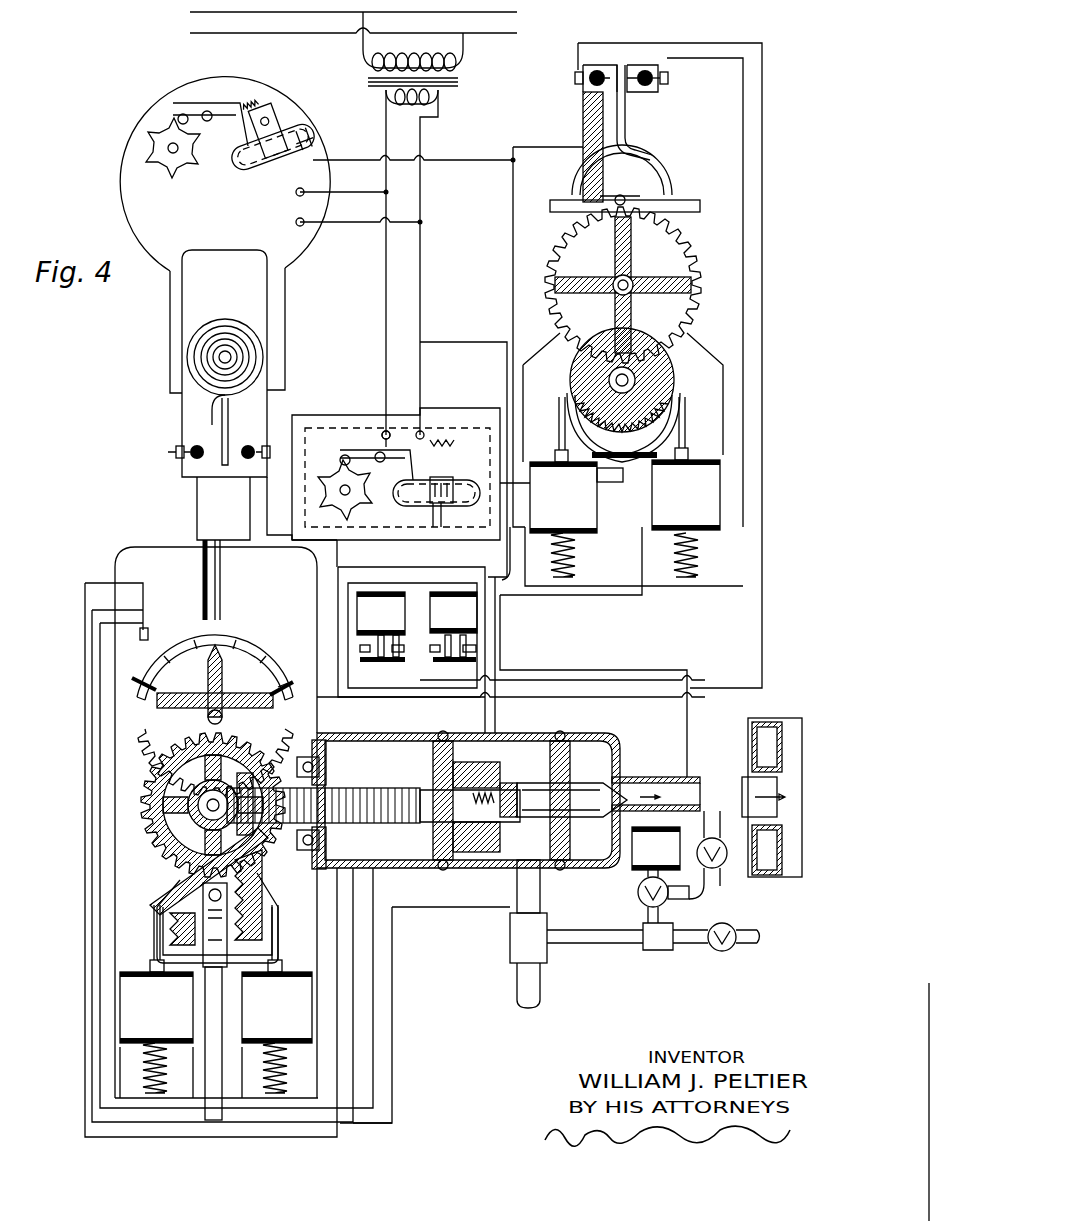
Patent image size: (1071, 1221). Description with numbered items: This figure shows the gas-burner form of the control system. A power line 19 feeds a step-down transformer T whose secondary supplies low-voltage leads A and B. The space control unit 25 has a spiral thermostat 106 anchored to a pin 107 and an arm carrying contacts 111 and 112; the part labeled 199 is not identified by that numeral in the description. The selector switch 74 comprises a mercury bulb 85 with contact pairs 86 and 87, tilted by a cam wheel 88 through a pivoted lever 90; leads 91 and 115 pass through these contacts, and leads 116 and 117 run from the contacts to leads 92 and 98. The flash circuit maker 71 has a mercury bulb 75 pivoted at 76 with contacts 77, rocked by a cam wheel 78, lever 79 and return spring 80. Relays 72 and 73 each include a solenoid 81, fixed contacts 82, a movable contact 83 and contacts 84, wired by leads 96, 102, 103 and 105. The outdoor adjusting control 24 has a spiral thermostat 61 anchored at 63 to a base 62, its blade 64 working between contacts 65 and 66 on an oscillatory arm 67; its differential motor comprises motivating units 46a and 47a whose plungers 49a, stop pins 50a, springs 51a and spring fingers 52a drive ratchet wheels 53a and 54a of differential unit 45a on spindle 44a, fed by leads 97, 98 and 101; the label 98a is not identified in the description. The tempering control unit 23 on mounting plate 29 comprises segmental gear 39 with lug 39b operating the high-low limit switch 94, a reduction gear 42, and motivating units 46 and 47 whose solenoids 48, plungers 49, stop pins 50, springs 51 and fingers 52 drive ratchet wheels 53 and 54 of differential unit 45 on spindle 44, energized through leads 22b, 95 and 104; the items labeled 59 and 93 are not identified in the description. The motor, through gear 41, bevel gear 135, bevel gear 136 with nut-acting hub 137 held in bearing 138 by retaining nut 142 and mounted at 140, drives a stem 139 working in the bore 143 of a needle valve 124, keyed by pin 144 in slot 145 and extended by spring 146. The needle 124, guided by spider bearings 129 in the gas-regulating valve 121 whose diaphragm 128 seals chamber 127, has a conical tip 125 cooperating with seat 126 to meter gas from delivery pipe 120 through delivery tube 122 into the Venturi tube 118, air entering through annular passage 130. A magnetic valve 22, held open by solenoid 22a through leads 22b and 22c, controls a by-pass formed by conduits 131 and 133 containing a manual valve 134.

The power and light line 19 is at (257, 48).
The step-down transformer T is at (470, 63).
The low voltage supply lead A is at (382, 268).
The low voltage supply lead B is at (420, 295).
The lead 91 is at (540, 141).
The space located control unit 25 is at (156, 352).
The lead 115 is at (250, 190).
The cam wheel 88 is at (167, 170).
The intermediately pivoted lever 90 is at (206, 106).
The motor-driven selector switch 74 is at (290, 141).
The mercury bulb switch 85 is at (320, 137).
The pair of contacts 86 is at (250, 165).
The pair of contacts 87 is at (318, 153).
The pin 107 is at (237, 352).
The spiral thermostat 106 is at (245, 367).
The shaft 199 is at (226, 412).
The contact 111 is at (168, 450).
The contact 112 is at (268, 450).
The lead 117 is at (197, 515).
The lead 116 is at (268, 500).
The lead 22b is at (350, 415).
The lead 22c is at (430, 408).
The lead 92 is at (600, 45).
The motor-driven circuit interrupter 71 is at (457, 413).
The conductor 93 is at (360, 432).
The cam wheel 78 is at (345, 490).
The intermediately pivoted lever 79 is at (376, 468).
The pair of contacts 77 is at (420, 500).
The flash contact mercury bulb switch 75 is at (456, 498).
The pivot 76 is at (452, 468).
The return spring 80 is at (448, 452).
The lead 103 is at (416, 575).
The lead 102 is at (535, 555).
The adjusting control unit 24 is at (771, 377).
The lead 97 is at (513, 245).
The conductor 98a is at (570, 369).
The switch contact 65 is at (575, 78).
The switch contact 66 is at (672, 70).
The oscillatory switch contact carrier arm 67 is at (574, 147).
The blade 64 is at (630, 108).
The anchor point 63 is at (640, 160).
The thermostat 61 is at (668, 180).
The segmental gear 39 is at (690, 232).
The large reduction gear 42 is at (690, 286).
The ratchet wheel 53a is at (622, 380).
The ratchet wheel 54a is at (623, 427).
The spindle 44a is at (668, 388).
The mounting base 62 is at (675, 352).
The differential unit 45a is at (563, 373).
The spring finger 52a is at (686, 425).
The plunger-like core 49a is at (690, 458).
The motivating unit 46a is at (563, 497).
The motivating unit 47a is at (686, 495).
The short lead 101 is at (610, 475).
The coiled compression spring 51a is at (692, 552).
The stop pins 50a is at (694, 578).
The lead 98 is at (626, 569).
The lead 96 is at (502, 618).
The relay switch 72 is at (381, 613).
The relay switch 73 is at (453, 612).
The pair of contacts 84 is at (410, 628).
The solenoid 81 is at (416, 634).
The fixed contacts 82 is at (365, 645).
The movable contact 83 is at (356, 660).
The mounting plate 29 is at (128, 565).
The high-low limit control switch 94 is at (200, 590).
The lead 95 is at (160, 615).
The solenoid coil 22a is at (95, 665).
The lead 104 is at (146, 632).
The switch-actuating lug 39b is at (132, 685).
The pointer 59 is at (222, 665).
The gear 41 is at (285, 748).
The beveled gear 135 is at (150, 790).
The bevel gear 136 is at (248, 773).
The bearing 138 is at (303, 759).
The nut-acting hub 137 is at (300, 850).
The retaining nut 142 is at (333, 762).
The common mounting 140 is at (334, 848).
The valve-actuating stem 139 is at (373, 805).
The ratchet wheel 53 is at (209, 871).
The ratchet wheel 54 is at (268, 880).
The spindle 44 is at (242, 875).
The differential unit 45 is at (148, 896).
The solenoid coil 48 is at (190, 1025).
The spring finger 52 is at (152, 925).
The plunger-like core 49 is at (150, 960).
The motivating unit 46 is at (156, 1007).
The motivating unit 47 is at (277, 1007).
The coiled compression spring 51 is at (168, 1066).
The stop pins 50 is at (166, 1088).
The lead 105 is at (350, 714).
The adjustable tempering rate control unit 23 is at (73, 895).
The gas-regulating valve 121 is at (613, 732).
The spider supporting bearings 129 is at (484, 800).
The diaphragm 128 is at (474, 796).
The gas-tight chamber 127 is at (531, 749).
The conical tip 125 is at (596, 765).
The valve seat 126 is at (620, 760).
The pin 144 is at (470, 795).
The needle valve 124 is at (572, 800).
The slot 145 is at (440, 812).
The axial bore 143 is at (500, 826).
The coiled compression spring 146 is at (466, 772).
The delivery tube 122 is at (655, 766).
The annular passage 130 is at (760, 746).
The Venturi tube 118 is at (800, 877).
The magnetic valve 22 is at (656, 848).
The manually operated valve 134 is at (722, 868).
The conduit 133 is at (710, 895).
The supply pipe 131 is at (595, 950).
The delivery pipe 120 is at (515, 985).